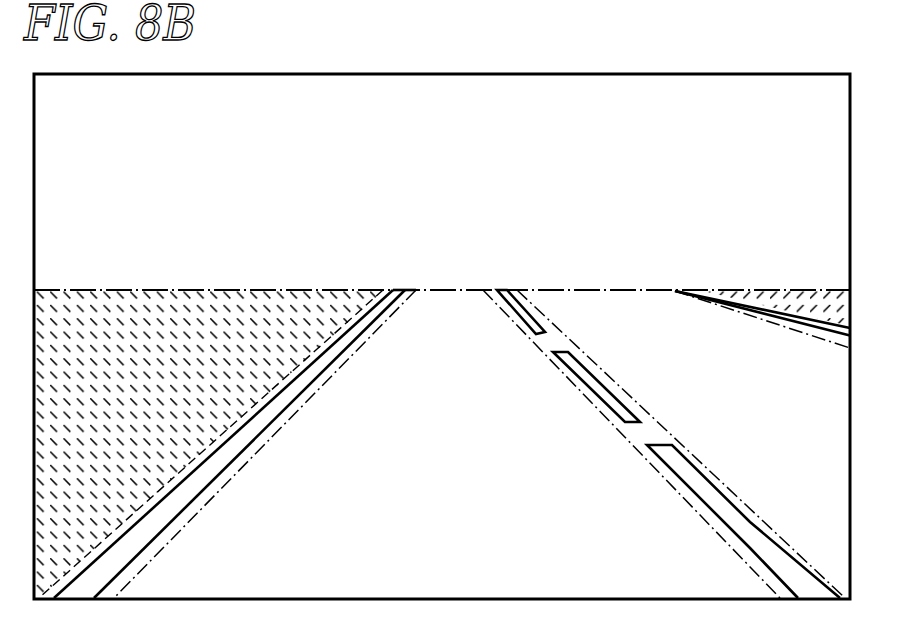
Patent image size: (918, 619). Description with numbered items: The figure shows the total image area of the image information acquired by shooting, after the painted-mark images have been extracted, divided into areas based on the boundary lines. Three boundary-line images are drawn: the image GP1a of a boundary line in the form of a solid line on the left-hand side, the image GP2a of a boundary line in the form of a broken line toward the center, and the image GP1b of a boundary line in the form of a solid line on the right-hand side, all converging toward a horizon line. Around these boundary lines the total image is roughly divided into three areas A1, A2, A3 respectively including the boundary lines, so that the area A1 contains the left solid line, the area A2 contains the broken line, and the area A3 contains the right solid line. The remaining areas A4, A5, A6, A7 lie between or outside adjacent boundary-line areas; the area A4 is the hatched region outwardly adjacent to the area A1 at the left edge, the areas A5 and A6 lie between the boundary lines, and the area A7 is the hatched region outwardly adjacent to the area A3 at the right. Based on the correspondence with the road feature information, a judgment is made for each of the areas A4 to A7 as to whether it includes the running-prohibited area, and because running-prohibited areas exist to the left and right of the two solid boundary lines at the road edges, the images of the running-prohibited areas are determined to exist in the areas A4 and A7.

The area including boundary line P1a A1 is at (158, 528).
The area including boundary line P2a A2 is at (684, 488).
The area including boundary line P1b A3 is at (830, 343).
The area outwardly adjacent to area A1 A4 is at (242, 308).
The area between adjacent areas A5 is at (442, 307).
The area between adjacent areas A6 is at (612, 310).
The area outwardly adjacent to area A3 A7 is at (817, 305).
The image of boundary line in the form of a solid line on the left-hand side GP1a is at (258, 420).
The image of boundary line in the form of a solid line on the right-hand side GP1b is at (783, 319).
The image of boundary line in the form of a broken line on the left-hand side GP2a is at (590, 386).